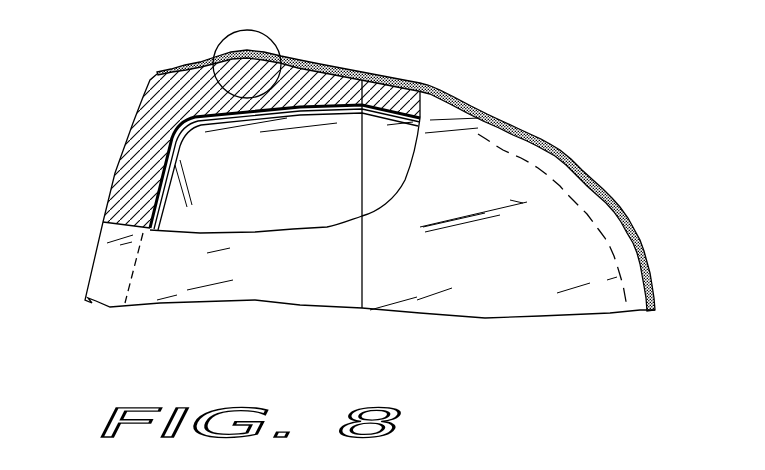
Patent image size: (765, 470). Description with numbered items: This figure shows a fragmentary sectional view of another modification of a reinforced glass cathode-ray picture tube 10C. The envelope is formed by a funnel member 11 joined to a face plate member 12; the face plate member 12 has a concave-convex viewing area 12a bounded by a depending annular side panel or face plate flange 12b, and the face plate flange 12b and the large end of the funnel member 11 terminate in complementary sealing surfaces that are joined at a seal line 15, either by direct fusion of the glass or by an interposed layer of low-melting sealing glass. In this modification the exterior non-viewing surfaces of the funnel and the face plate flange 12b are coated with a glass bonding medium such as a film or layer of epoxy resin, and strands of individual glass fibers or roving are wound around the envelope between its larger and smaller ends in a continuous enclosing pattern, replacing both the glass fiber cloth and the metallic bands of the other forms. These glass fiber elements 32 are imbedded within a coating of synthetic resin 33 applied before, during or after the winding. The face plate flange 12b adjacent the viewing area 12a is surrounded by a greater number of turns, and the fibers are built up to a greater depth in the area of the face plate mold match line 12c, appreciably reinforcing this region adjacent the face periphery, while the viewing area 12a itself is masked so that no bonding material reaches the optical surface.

The tube 10C is at (557, 137).
The funnel member 11 is at (607, 216).
The face plate member 12 is at (92, 256).
The viewing area 12a is at (145, 143).
The face plate flange 12b is at (180, 90).
The face plate mold match line 12c is at (250, 63).
The seal line 15 is at (362, 290).
The glass fiber elements 32 is at (262, 50).
The coating of synthetic resin 33 is at (487, 54).